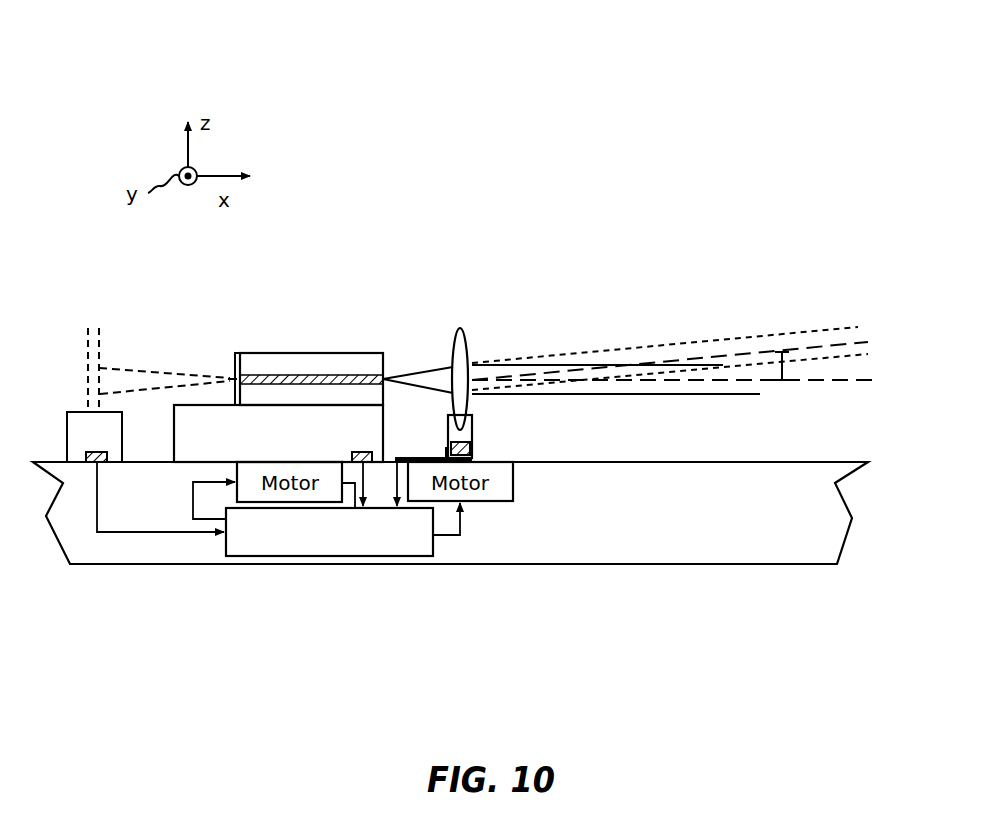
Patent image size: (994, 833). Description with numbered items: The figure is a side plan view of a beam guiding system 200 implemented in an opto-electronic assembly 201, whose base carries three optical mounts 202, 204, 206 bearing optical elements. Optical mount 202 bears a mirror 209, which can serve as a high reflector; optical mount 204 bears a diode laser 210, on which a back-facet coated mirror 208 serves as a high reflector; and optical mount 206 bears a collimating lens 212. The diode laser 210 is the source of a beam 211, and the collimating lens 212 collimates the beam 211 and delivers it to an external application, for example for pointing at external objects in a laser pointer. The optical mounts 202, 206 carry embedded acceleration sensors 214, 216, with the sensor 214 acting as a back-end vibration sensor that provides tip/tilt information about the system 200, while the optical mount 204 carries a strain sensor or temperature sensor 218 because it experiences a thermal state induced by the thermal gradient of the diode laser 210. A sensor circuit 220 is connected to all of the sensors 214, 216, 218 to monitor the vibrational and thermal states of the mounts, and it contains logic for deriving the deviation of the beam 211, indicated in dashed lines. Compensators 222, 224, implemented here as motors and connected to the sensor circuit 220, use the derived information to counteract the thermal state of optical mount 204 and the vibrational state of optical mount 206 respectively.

The beam guiding system 200 is at (717, 81).
The opto-electronic assembly 201 is at (523, 565).
The optical mount 202 is at (77, 412).
The optical mount 204 is at (301, 444).
The optical mount 206 is at (472, 420).
The back-facet coated mirror 208 is at (233, 360).
The mirror 209 is at (95, 327).
The diode laser 210 is at (320, 352).
The beam 211 is at (633, 394).
The collimating lens 212 is at (462, 332).
The acceleration sensor 214 is at (107, 458).
The acceleration sensor 216 is at (473, 444).
The strain sensor or temperature sensor 218 is at (377, 453).
The sensor circuit 220 is at (315, 556).
The compensator 222 is at (236, 492).
The compensator 224 is at (513, 490).